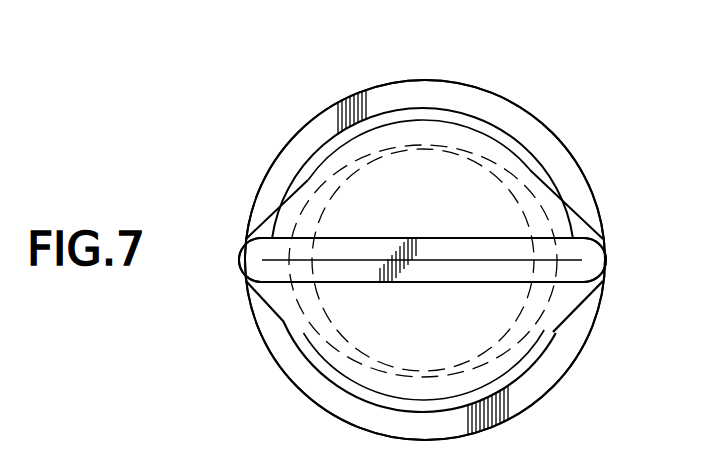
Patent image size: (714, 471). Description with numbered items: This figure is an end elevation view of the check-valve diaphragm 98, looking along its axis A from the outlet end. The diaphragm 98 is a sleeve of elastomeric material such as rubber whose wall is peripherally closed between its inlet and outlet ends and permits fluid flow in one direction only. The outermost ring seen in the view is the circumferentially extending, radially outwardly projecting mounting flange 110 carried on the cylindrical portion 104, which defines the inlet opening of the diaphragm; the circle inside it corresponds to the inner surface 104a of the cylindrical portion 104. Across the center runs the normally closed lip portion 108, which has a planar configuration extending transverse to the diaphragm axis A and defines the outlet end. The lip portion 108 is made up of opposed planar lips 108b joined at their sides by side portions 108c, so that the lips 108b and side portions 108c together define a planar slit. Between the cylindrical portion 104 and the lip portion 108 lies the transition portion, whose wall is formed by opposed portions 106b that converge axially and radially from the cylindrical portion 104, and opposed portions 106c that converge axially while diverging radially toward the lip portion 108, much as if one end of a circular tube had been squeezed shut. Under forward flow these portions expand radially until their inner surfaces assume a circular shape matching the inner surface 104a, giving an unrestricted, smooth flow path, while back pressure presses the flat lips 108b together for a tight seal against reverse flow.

The diaphragm 98 is at (368, 68).
The cylindrical portion 104 is at (490, 123).
The inner surface of cylindrical portion 104a is at (469, 360).
The mounting flange 110 is at (570, 155).
The opposed converging portions of transition portion 106b is at (355, 178).
The opposed diverging portions of transition portion 106c is at (275, 212).
The lip portion 108 is at (578, 227).
The planar lips 108b is at (358, 250).
The side portions 108c is at (240, 254).
The diaphragm axis A is at (426, 258).